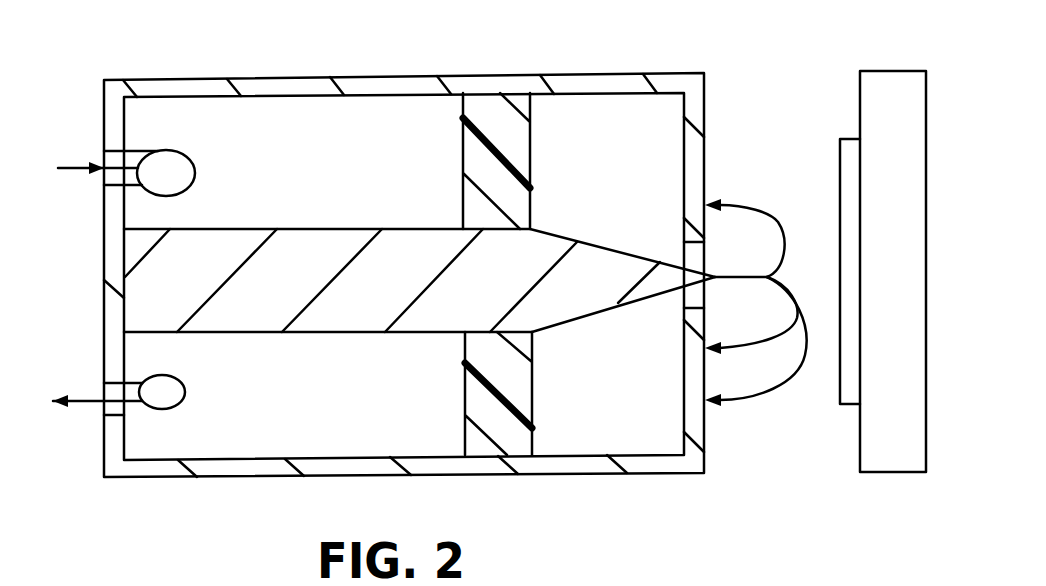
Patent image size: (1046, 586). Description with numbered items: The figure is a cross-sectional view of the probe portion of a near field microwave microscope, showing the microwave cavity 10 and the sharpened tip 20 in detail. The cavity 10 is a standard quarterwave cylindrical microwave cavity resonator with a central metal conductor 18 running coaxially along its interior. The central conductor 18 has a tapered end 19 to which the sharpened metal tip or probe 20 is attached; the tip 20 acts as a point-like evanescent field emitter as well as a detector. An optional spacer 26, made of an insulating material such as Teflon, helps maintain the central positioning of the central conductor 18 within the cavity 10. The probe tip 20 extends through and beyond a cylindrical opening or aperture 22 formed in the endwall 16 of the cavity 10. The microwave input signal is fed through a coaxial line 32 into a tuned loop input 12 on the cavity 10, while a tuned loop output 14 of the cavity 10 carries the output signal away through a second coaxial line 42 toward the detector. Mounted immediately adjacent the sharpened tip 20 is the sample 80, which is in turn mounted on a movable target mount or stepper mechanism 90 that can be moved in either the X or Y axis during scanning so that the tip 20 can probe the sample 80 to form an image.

The microwave cavity 10 is at (420, 57).
The tuned loop input 12 is at (195, 167).
The tuned loop output 14 is at (185, 387).
The endwall 16 is at (705, 108).
The central metal conductor 18 is at (318, 229).
The tapered end 19 is at (604, 311).
The sharpened metal tip 20 is at (752, 279).
The aperture 22 is at (692, 254).
The spacer 26 is at (464, 390).
The coaxial line 32 is at (83, 167).
The second coaxial line 42 is at (82, 400).
The sample 80 is at (852, 406).
The stepper mechanism 90 is at (887, 472).